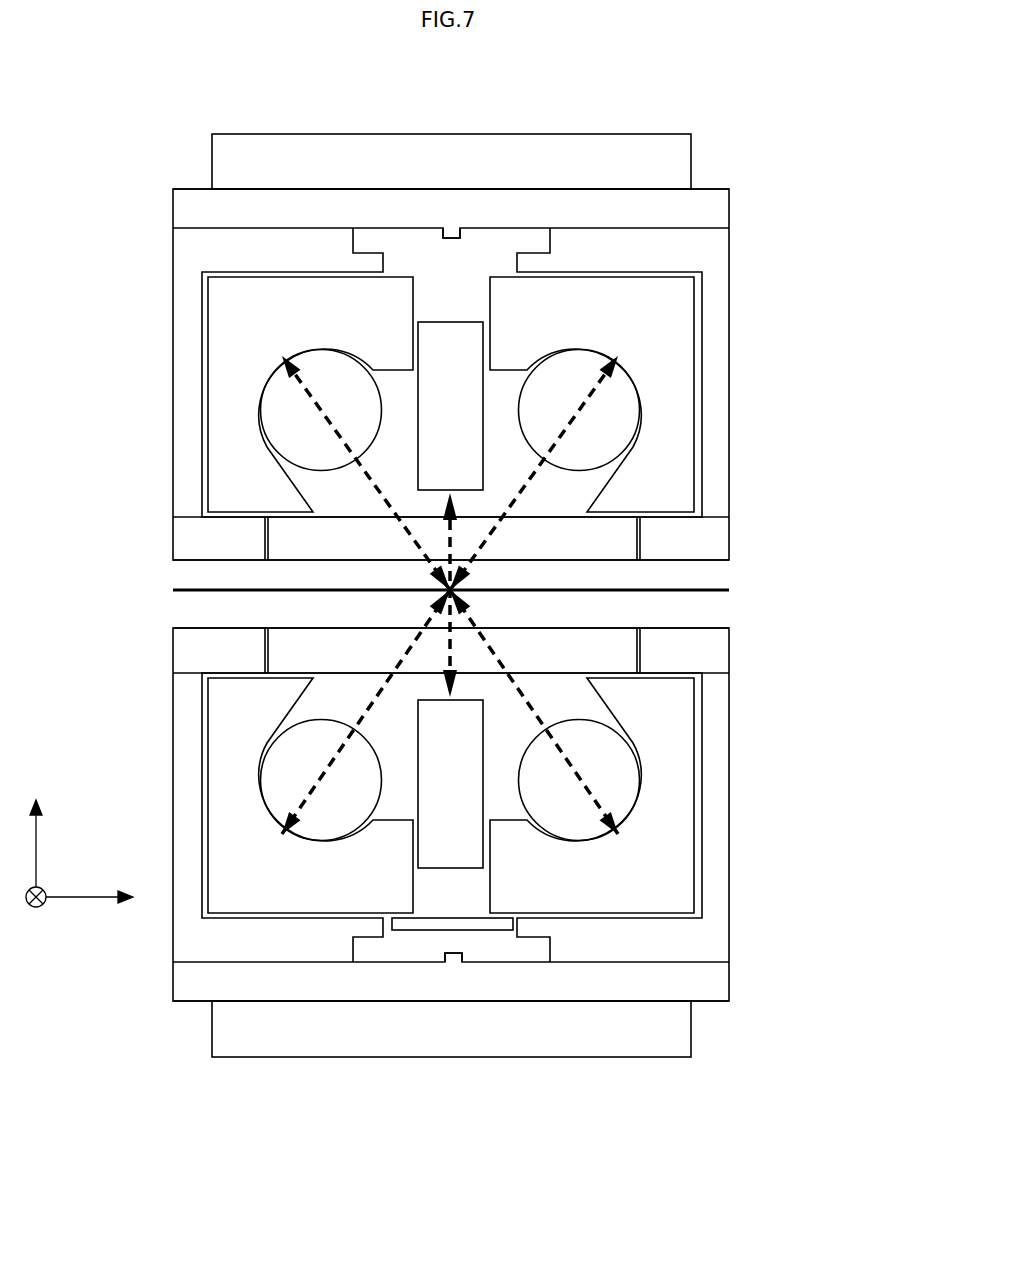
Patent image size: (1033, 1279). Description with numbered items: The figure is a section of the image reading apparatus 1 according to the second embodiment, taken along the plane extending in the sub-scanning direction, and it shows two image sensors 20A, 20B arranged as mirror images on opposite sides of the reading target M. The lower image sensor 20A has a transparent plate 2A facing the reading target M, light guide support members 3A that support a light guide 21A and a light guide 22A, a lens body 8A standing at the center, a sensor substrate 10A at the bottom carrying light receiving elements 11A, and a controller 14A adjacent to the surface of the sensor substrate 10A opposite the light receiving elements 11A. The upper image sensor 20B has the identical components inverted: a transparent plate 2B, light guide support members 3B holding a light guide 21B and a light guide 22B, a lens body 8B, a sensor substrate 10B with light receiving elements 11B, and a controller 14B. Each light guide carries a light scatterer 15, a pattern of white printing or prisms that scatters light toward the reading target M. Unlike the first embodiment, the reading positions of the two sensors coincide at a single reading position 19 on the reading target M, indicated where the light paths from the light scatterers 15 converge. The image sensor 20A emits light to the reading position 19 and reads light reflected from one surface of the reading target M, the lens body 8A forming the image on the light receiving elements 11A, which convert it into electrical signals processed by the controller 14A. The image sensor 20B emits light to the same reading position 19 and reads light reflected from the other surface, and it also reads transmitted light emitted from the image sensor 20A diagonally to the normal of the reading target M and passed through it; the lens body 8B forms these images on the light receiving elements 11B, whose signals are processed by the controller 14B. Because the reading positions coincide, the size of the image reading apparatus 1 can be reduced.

The image reading apparatus 1 is at (716, 132).
The transparent plate 2A is at (608, 655).
The transparent plate 2B is at (287, 538).
The light guide support members 3A is at (668, 812).
The light guide support members 3B is at (677, 308).
The lens body 8A is at (450, 835).
The lens body 8B is at (453, 333).
The sensor substrate 10A is at (692, 990).
The sensor substrate 10B is at (672, 205).
The light receiving elements 11A is at (455, 962).
The light receiving elements 11B is at (452, 230).
The controller 14A is at (657, 1023).
The controller 14B is at (657, 165).
The light scatterer 15 is at (300, 352).
The reading position 19 is at (462, 583).
The image sensor 20A is at (730, 848).
The image sensor 20B is at (730, 427).
The light guide 21A is at (608, 768).
The light guide 21B is at (605, 420).
The light guide 22A is at (288, 762).
The light guide 22B is at (290, 423).
The reading target M is at (720, 588).